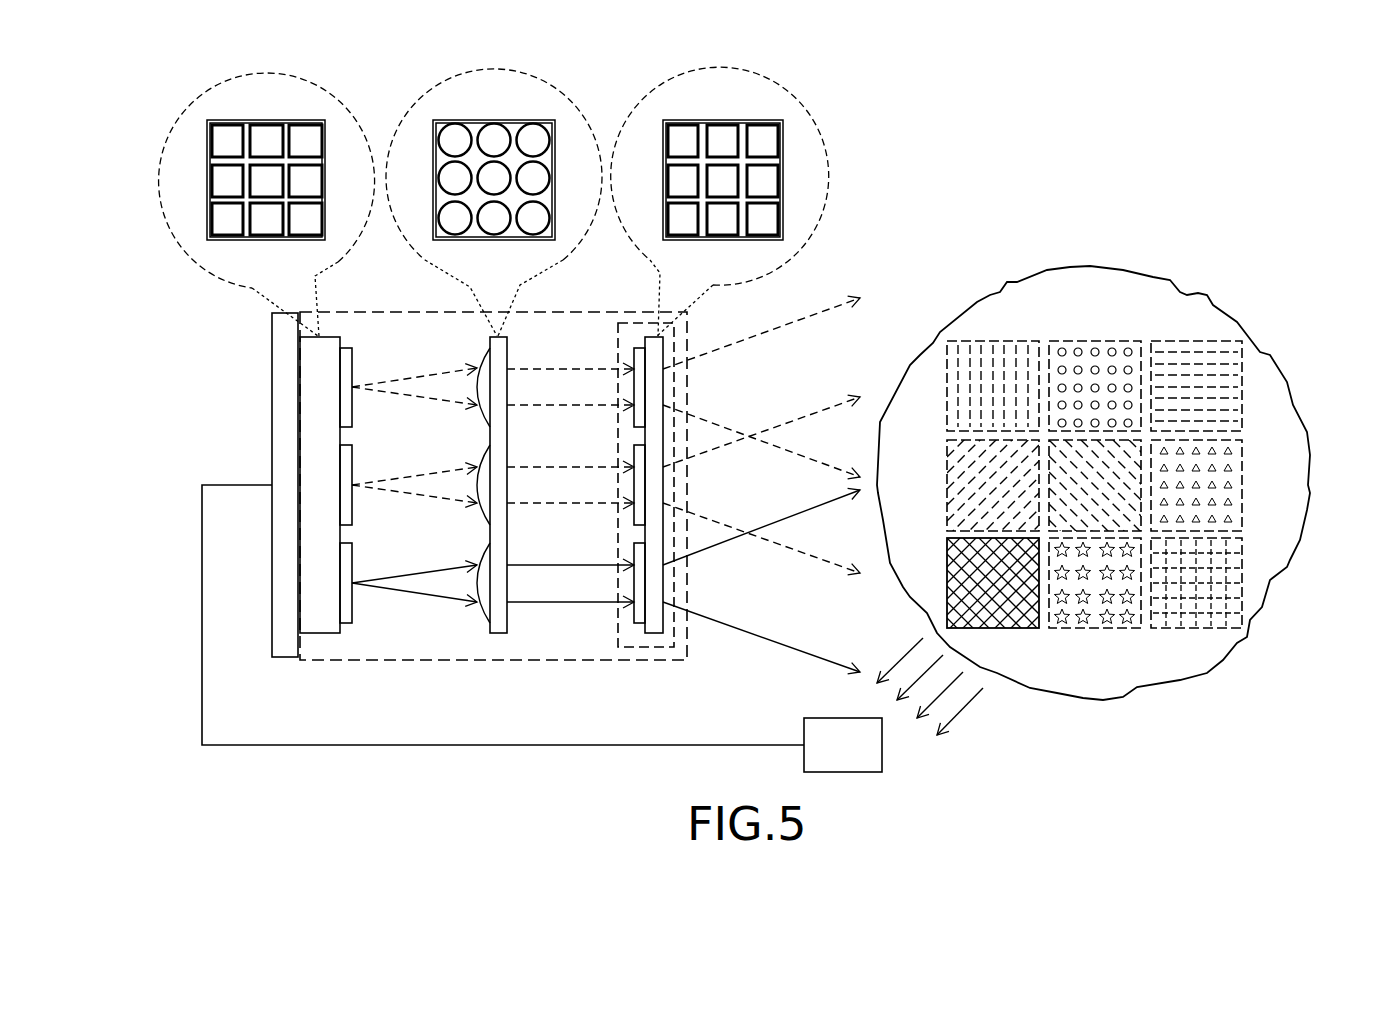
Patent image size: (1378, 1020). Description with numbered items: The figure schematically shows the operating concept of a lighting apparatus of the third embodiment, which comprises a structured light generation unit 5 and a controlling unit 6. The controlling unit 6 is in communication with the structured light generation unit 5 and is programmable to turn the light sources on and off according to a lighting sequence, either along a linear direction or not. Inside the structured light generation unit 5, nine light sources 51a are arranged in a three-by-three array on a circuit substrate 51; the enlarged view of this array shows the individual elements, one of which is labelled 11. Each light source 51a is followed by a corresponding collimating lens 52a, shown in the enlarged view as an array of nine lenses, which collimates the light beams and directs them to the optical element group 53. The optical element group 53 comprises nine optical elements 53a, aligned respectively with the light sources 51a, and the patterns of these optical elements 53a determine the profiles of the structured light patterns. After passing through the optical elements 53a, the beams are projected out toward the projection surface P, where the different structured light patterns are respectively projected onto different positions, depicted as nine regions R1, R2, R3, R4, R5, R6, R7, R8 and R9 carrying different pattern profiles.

The structured light generation unit 5 is at (522, 511).
The controlling unit 6 is at (287, 407).
The light emitting element 11 is at (207, 212).
The circuit substrate 51 is at (330, 463).
The light sources 51a is at (256, 204).
The collimating lenses 52a is at (455, 130).
The optical element group 53 is at (663, 330).
The optical elements 53a is at (685, 130).
The projection surface P is at (1198, 320).
The irradiation region 1 R1 is at (975, 340).
The irradiation region 2 R2 is at (1095, 340).
The irradiation region 3 R3 is at (1225, 340).
The irradiation region 4 R4 is at (943, 485).
The irradiation region 5 R5 is at (1103, 530).
The irradiation region 6 R6 is at (1245, 477).
The irradiation region 7 R7 is at (945, 578).
The irradiation region 8 R8 is at (1085, 630).
The irradiation region 9 R9 is at (1242, 600).